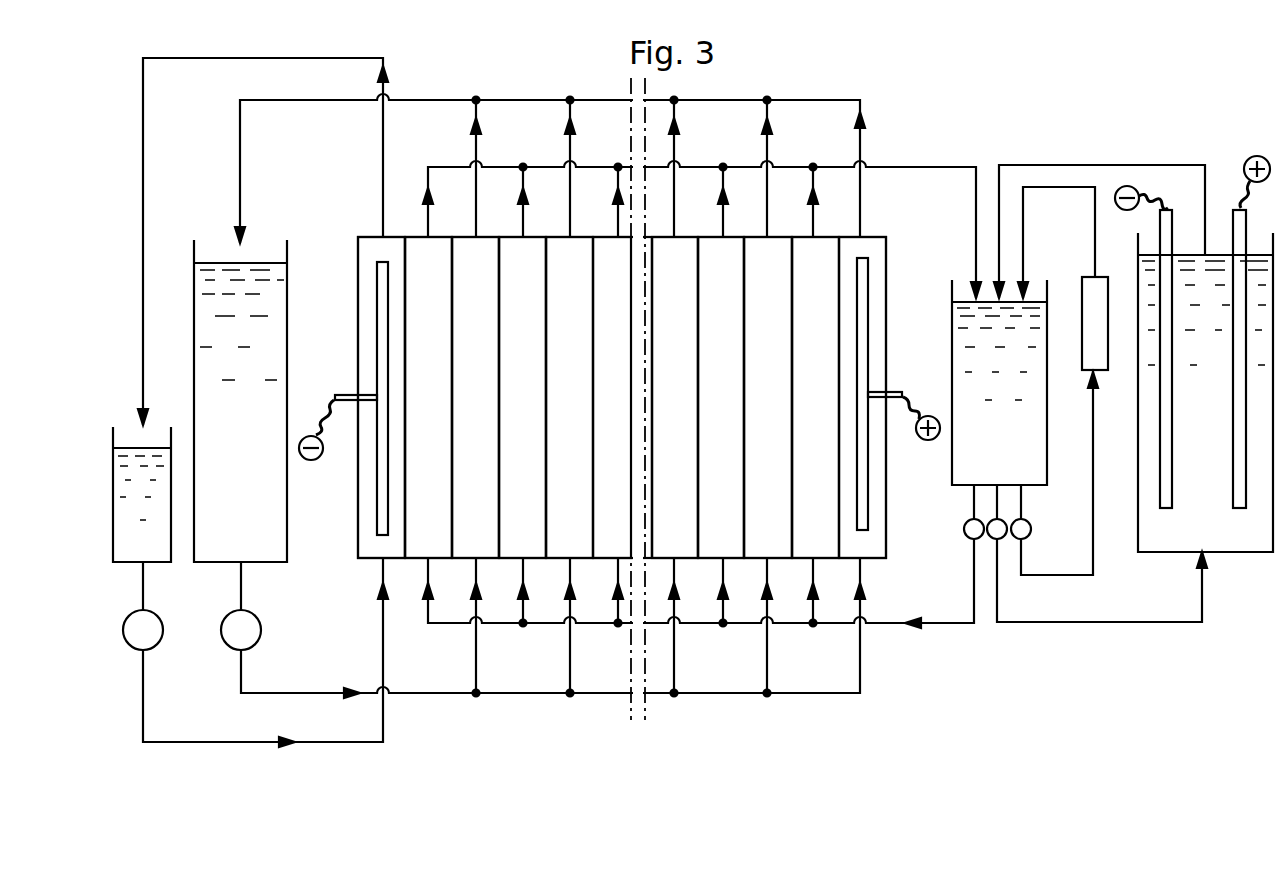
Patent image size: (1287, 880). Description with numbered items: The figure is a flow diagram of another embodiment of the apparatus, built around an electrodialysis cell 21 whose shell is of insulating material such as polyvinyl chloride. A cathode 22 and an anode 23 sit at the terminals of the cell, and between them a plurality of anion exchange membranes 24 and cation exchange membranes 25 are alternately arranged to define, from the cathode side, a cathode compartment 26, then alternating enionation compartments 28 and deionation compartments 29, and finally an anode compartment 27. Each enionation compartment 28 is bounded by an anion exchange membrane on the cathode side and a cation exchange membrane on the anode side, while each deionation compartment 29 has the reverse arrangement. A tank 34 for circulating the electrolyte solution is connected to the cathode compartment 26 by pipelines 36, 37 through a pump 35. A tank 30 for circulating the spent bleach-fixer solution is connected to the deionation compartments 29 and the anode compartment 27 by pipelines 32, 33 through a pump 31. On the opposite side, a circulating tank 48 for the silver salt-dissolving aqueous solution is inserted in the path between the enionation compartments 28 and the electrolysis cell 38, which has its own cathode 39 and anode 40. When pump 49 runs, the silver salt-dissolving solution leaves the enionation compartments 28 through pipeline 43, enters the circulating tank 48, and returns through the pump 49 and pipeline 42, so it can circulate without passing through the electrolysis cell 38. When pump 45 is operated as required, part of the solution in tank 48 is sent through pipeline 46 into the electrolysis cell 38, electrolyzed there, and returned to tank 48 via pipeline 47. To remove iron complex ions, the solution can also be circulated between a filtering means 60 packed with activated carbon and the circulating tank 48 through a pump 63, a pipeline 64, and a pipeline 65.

The electrodialysis cell 21 is at (886, 478).
The cathode 22 is at (376, 313).
The anode 23 is at (868, 312).
The anion exchange membrane 24 is at (406, 322).
The cation exchange membrane 25 is at (453, 273).
The cathode compartment 26 is at (368, 546).
The anode compartment 27 is at (864, 541).
The enionation compartment 28 is at (417, 440).
The deionation compartment 29 is at (465, 397).
The tank 30 is at (194, 310).
The pump 31 is at (232, 613).
The pipeline 32 is at (321, 693).
The pipeline 33 is at (331, 101).
The tank 34 is at (174, 452).
The pump 35 is at (138, 613).
The pipeline 36 is at (219, 742).
The pipeline 37 is at (259, 59).
The electrolysis cell 38 is at (1255, 553).
The cathode 39 is at (1173, 328).
The anode 40 is at (1234, 414).
The pipeline 42 is at (944, 624).
The pipeline 43 is at (930, 167).
The pump 45 is at (1003, 540).
The pipeline 46 is at (1166, 623).
The pipeline 47 is at (1144, 167).
The circulating tank 48 is at (952, 356).
The pump 49 is at (969, 540).
The filtering means 60 is at (1108, 286).
The pump 63 is at (1031, 527).
The pipeline 64 is at (1093, 517).
The pipeline 65 is at (1058, 188).